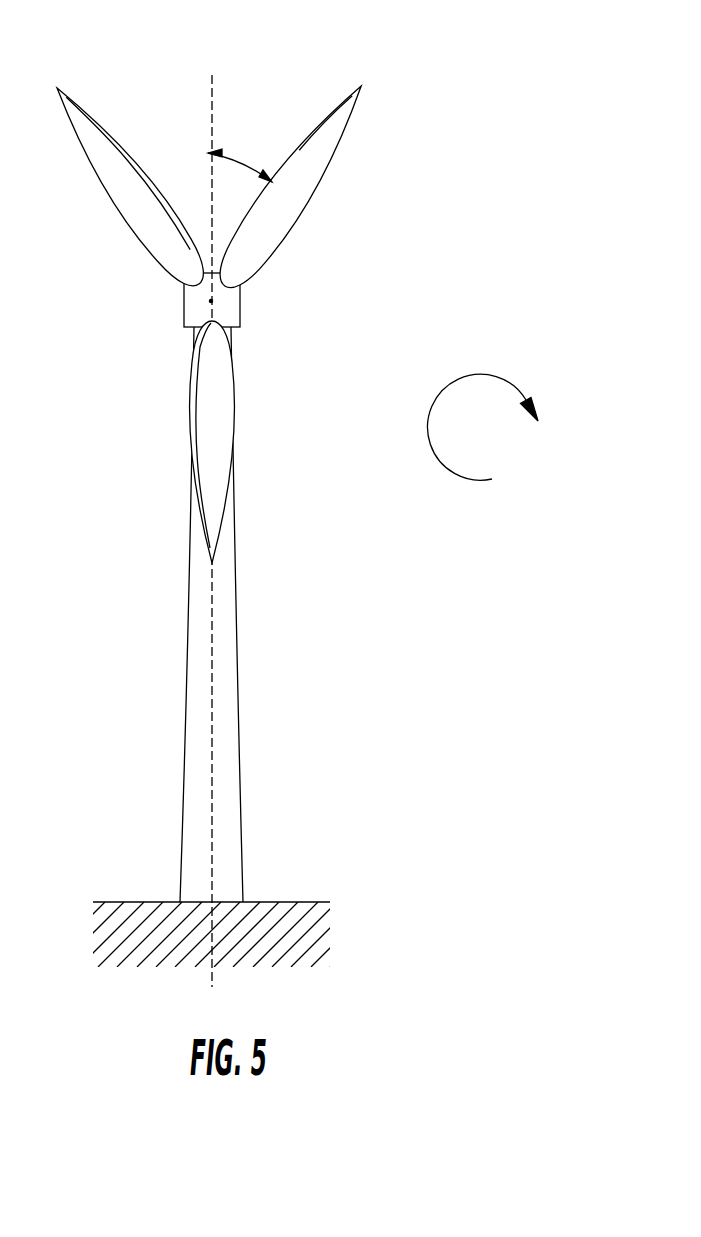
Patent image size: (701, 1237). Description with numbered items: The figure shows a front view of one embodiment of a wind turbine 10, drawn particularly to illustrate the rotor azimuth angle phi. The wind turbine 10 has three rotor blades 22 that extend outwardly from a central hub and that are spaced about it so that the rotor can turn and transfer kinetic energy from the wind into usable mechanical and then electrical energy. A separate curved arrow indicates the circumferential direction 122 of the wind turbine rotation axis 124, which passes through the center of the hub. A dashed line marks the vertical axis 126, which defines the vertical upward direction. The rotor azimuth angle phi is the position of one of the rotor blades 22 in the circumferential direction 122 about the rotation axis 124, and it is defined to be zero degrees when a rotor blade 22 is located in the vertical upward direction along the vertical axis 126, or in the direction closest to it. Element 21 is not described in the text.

The wind turbine 10 is at (250, 530).
The tower 21 is at (235, 707).
The rotor blade 22 is at (116, 201).
The circumferential direction 122 is at (473, 373).
The wind turbine rotation axis 124 is at (212, 301).
The vertical axis 126 is at (213, 616).
The rotor azimuth angle phi is at (240, 157).